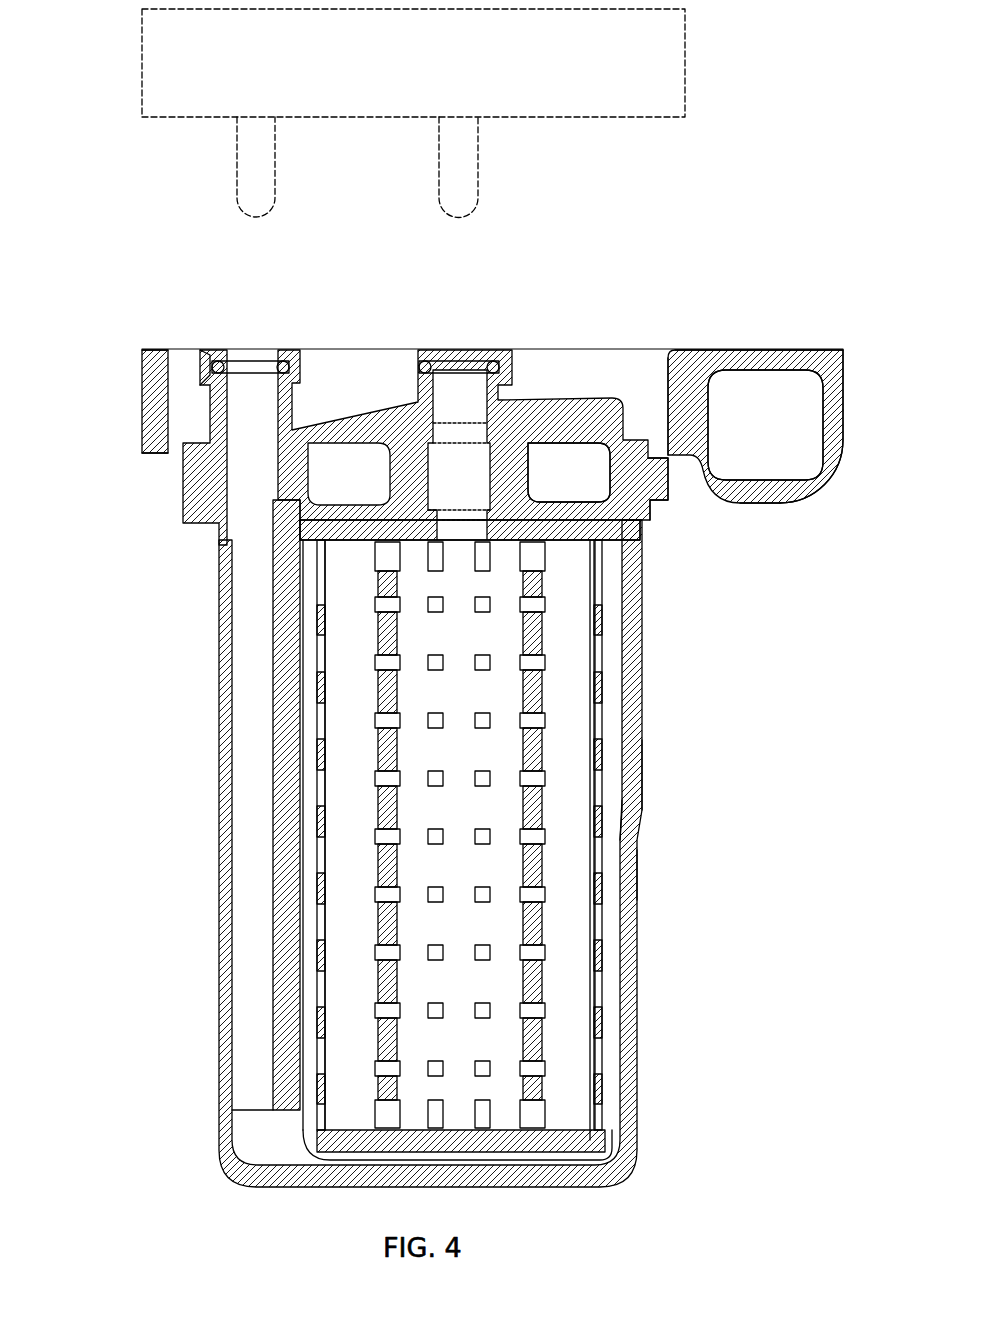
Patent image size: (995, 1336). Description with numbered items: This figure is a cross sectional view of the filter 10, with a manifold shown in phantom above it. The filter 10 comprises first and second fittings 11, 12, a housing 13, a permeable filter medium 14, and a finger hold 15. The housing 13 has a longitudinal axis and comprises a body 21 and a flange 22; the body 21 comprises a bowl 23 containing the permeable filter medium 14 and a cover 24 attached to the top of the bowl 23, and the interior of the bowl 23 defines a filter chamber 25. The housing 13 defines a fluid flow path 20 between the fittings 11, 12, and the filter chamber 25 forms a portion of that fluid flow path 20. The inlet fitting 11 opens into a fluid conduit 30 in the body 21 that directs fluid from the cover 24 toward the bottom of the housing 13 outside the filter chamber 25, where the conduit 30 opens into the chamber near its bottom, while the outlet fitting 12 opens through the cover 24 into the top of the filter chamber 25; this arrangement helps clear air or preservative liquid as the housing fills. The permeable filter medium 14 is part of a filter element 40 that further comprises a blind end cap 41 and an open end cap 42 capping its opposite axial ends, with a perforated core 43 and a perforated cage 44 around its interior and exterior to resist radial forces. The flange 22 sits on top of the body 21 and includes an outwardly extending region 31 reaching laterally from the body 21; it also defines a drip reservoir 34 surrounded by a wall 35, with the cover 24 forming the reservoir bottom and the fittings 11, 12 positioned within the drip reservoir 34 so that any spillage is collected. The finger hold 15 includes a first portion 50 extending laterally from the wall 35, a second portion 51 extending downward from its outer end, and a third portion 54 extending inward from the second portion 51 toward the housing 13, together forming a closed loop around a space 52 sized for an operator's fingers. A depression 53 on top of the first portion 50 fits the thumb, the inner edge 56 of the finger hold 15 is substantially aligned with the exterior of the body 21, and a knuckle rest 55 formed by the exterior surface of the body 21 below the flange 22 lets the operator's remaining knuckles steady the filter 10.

The filter 10 is at (147, 240).
The first fitting 11 is at (286, 352).
The second fitting 12 is at (488, 352).
The housing 13 is at (643, 628).
The permeable filter medium 14 is at (568, 720).
The finger hold 15 is at (836, 354).
The fluid flow path 20 is at (455, 465).
The body 21 is at (643, 775).
The flange 22 is at (142, 402).
The bowl 23 is at (623, 810).
The cover 24 is at (575, 410).
The filter chamber 25 is at (612, 869).
The fluid conduit 30 is at (250, 643).
The outwardly extending region 31 is at (142, 365).
The drip reservoir 34 is at (383, 362).
The wall 35 is at (142, 445).
The filter element 40 is at (348, 722).
The blind end cap 41 is at (318, 1138).
The open end cap 42 is at (330, 540).
The perforated core 43 is at (358, 805).
The perforated cage 44 is at (320, 852).
The first portion 50 is at (775, 360).
The second portion 51 is at (838, 417).
The space 52 is at (783, 443).
The depression 53 is at (752, 352).
The third portion 54 is at (757, 505).
The knuckle rest 55 is at (645, 548).
The inner edge 56 is at (668, 372).